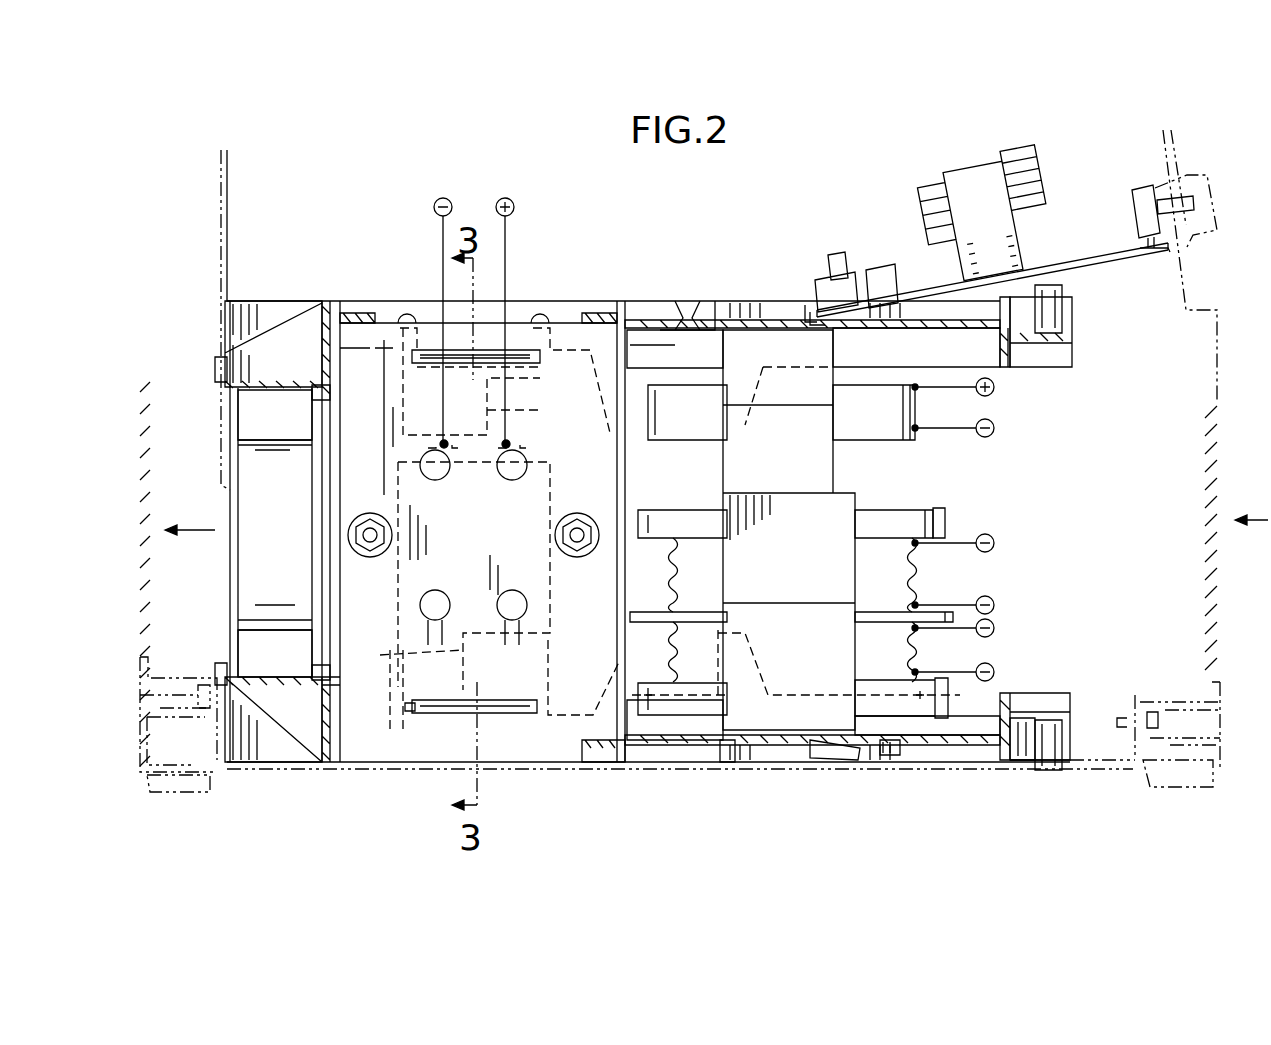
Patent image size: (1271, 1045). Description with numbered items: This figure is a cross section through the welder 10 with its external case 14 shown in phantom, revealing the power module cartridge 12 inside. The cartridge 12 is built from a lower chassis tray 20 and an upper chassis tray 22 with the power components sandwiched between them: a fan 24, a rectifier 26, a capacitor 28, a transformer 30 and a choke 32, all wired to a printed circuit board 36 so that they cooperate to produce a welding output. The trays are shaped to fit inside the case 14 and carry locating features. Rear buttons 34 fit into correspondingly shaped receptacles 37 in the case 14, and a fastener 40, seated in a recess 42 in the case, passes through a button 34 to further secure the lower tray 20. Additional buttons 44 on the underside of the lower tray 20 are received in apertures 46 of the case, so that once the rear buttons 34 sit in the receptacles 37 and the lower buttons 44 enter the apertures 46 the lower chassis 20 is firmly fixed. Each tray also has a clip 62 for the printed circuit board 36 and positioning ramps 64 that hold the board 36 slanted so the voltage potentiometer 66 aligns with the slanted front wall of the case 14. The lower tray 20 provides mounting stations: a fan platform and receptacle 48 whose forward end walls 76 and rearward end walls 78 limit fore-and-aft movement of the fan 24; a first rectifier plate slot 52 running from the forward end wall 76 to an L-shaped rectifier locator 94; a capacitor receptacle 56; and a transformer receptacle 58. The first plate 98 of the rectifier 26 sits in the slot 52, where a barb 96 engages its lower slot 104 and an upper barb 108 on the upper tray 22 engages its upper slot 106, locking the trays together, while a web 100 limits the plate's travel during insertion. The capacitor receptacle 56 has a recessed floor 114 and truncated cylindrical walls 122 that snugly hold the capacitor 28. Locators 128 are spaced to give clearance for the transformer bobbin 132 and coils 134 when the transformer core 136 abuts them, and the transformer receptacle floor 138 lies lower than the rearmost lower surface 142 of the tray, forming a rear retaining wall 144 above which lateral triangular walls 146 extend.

The welder 10 is at (1205, 795).
The power module cartridge 12 is at (322, 207).
The external case 14 is at (215, 252).
The lower chassis tray 20 is at (700, 775).
The upper chassis tray 22 is at (690, 300).
The fan 24 is at (240, 493).
The rectifier 26 is at (365, 700).
The capacitor 28 is at (553, 487).
The transformer 30 is at (955, 515).
The choke 32 is at (838, 450).
The buttons 34 is at (215, 365).
The printed circuit board 36 is at (1118, 250).
The receptacles 37 is at (208, 715).
The fastener 40 is at (198, 695).
The recess 42 is at (200, 684).
The buttons 44 is at (1063, 295).
The apertures 46 is at (1030, 772).
The fan platform and receptacle 48 is at (284, 383).
The first rectifier plate mounting slot 52 is at (325, 682).
The capacitor receptacle 56 is at (403, 398).
The transformer receptacle 58 is at (792, 333).
The clip 62 is at (812, 320).
The PCB positioning ramps 64 is at (877, 300).
The voltage POT 66 is at (1163, 183).
The forward end walls 76 is at (320, 390).
The rearward end walls 78 is at (240, 400).
The rectifier locator 94 is at (623, 402).
The barb 96 is at (505, 705).
The first plate 98 is at (520, 335).
The web 100 is at (600, 313).
The lower slot 104 is at (490, 705).
The upper slot 106 is at (435, 352).
The upper barb 108 is at (490, 350).
The recessed floor 114 is at (695, 672).
The truncated cylindrical wall 122 is at (493, 410).
The locators 128 is at (710, 430).
The transformer bobbin 132 is at (945, 510).
The transformer coils 134 is at (918, 575).
The transformer core 136 is at (835, 660).
The transformer receptacle floor 138 is at (770, 322).
The rearmost lower surface 142 is at (1070, 350).
The rear retaining wall 144 is at (1000, 340).
The lateral triangular walls 146 is at (1005, 360).